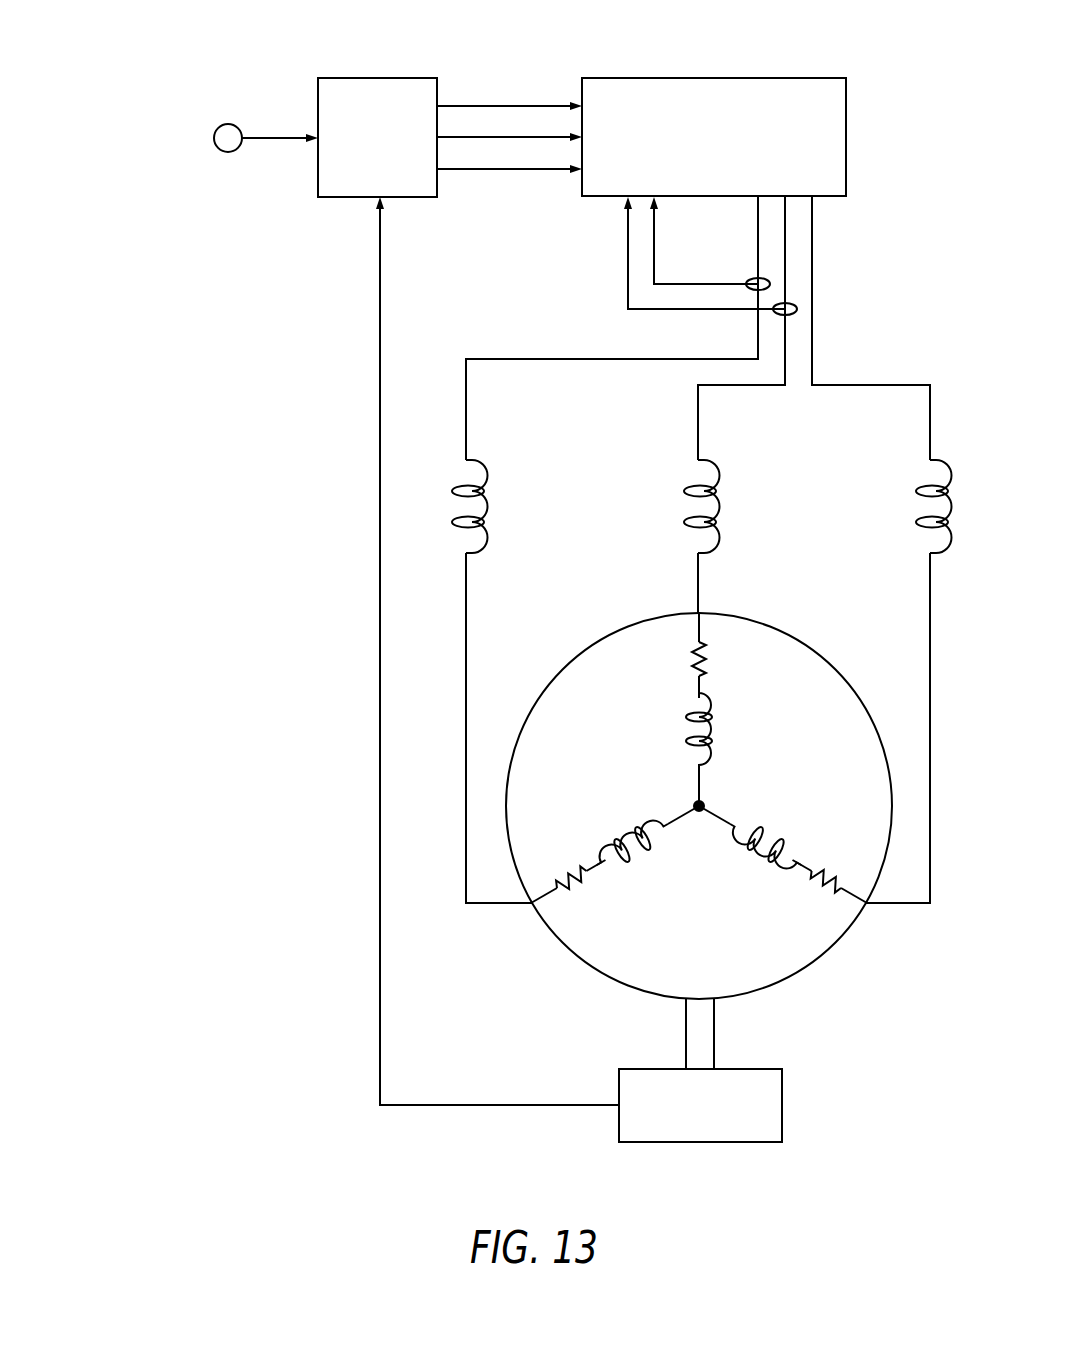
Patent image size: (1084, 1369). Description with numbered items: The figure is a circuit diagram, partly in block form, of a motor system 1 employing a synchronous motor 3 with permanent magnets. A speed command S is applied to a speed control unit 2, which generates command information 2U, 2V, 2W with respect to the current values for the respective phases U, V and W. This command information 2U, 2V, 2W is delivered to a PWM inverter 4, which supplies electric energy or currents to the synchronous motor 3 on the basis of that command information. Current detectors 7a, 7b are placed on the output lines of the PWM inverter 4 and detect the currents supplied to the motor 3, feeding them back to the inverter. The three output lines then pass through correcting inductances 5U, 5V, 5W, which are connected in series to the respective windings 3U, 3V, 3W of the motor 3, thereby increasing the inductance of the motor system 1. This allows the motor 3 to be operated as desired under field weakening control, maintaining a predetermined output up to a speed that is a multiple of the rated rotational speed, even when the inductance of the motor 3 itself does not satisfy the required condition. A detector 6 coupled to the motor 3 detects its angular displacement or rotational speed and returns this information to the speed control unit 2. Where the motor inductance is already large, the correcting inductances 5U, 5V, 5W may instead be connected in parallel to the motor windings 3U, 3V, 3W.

The motor system 1 is at (520, 571).
The speed control unit 2 is at (378, 78).
The command information 2U is at (463, 103).
The command information 2V is at (516, 135).
The command information 2W is at (496, 170).
The PWM inverter 4 is at (715, 77).
The current detector 7a is at (770, 284).
The current detector 7b is at (797, 309).
The correcting inductance 5U is at (488, 502).
The correcting inductance 5V is at (720, 502).
The correcting inductance 5W is at (916, 520).
The synchronous motor 3 is at (699, 806).
The winding 3U is at (615, 867).
The winding 3V is at (646, 709).
The winding 3W is at (783, 833).
The detector 6 is at (782, 1105).
The speed command S is at (267, 138).